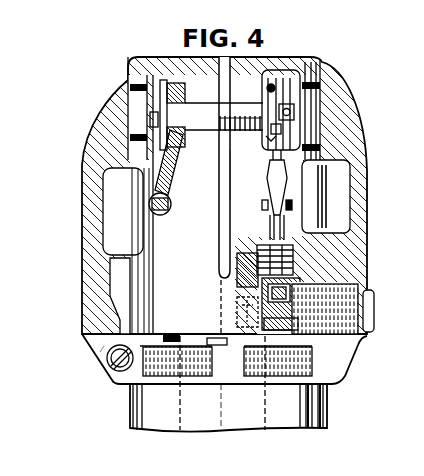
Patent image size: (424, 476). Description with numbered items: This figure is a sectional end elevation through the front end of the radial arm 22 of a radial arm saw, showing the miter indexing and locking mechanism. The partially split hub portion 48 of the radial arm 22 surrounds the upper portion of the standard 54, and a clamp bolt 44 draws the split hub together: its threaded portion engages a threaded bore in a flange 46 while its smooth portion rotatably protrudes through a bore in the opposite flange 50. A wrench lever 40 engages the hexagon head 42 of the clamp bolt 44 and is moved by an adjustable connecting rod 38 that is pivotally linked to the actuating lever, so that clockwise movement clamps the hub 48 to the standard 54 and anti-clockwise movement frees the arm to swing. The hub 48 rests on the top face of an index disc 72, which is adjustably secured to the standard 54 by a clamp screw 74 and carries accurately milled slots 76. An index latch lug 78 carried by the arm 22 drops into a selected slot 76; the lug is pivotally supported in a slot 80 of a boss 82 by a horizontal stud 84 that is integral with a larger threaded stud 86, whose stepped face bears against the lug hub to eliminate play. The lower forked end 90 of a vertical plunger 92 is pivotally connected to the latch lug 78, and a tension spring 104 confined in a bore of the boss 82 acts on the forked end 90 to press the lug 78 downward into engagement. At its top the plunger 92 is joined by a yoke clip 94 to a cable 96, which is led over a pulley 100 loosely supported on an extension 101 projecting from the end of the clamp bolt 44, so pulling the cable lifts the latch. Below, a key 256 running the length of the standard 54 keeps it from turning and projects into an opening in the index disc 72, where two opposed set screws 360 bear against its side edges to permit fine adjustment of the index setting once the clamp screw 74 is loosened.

The radial arm 22 is at (104, 108).
The adjustable connecting rod 38 is at (150, 196).
The wrench lever 40 is at (150, 221).
The hexagon head 42 is at (172, 122).
The clamp bolt 44 is at (208, 103).
The flange 46 is at (231, 172).
The partially split hub portion 48 is at (118, 278).
The flange 50 is at (209, 167).
The standard 54 is at (330, 421).
The index disc 72 is at (100, 352).
The clamp screw 74 is at (112, 366).
The slots 76 is at (126, 386).
The index latch lug 78 is at (262, 325).
The slot 80 is at (260, 282).
The boss 82 is at (352, 275).
The horizontal stud 84 is at (238, 306).
The threaded stud 86 is at (376, 315).
The lower forked end 90 is at (296, 272).
The vertical plunger 92 is at (284, 228).
The yoke clip 94 is at (289, 192).
The cable 96 is at (271, 82).
The pulley 100 is at (271, 107).
The extension 101 is at (294, 113).
The tension spring 104 is at (291, 259).
The key 256 is at (229, 418).
The set screws 360 is at (174, 432).